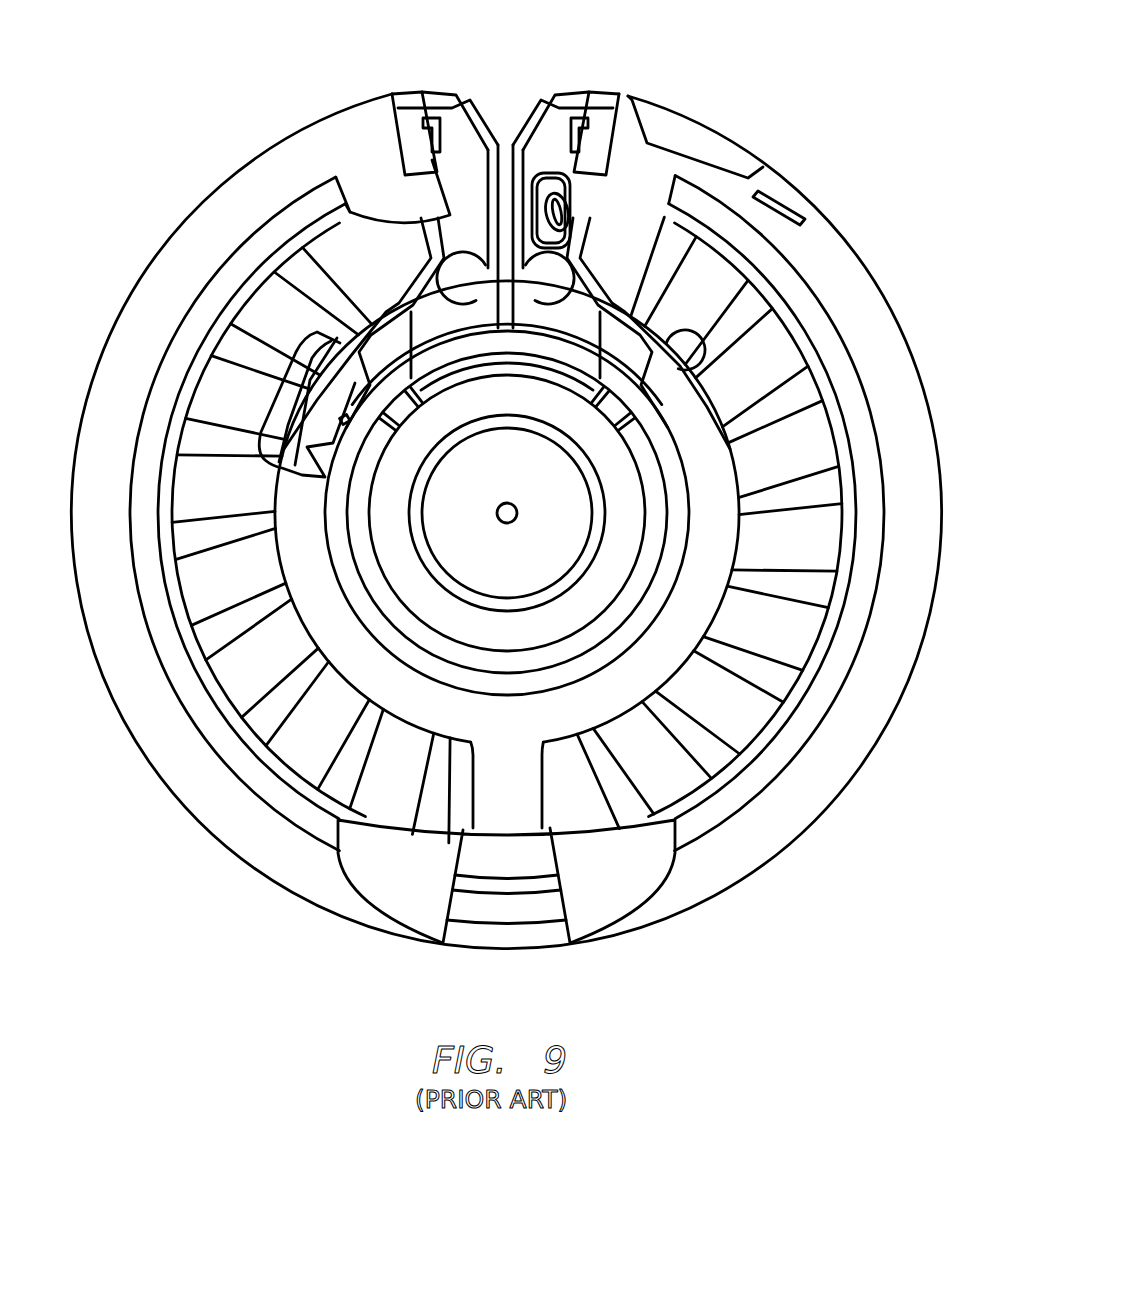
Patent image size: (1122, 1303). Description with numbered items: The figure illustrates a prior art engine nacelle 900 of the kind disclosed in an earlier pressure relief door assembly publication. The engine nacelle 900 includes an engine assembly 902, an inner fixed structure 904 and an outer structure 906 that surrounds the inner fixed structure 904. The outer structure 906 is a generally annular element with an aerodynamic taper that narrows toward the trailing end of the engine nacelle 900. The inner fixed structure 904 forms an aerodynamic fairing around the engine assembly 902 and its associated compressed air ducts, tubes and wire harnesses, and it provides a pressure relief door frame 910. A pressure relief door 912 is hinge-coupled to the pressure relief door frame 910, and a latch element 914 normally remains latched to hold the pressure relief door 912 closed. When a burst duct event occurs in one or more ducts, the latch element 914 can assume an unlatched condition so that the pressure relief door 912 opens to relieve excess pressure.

The engine nacelle 900 is at (242, 868).
The engine assembly 902 is at (497, 345).
The inner fixed structure 904 is at (600, 283).
The outer structure 906 is at (178, 356).
The pressure relief door frame 910 is at (317, 463).
The pressure relief door 912 is at (382, 417).
The latch element 914 is at (350, 420).